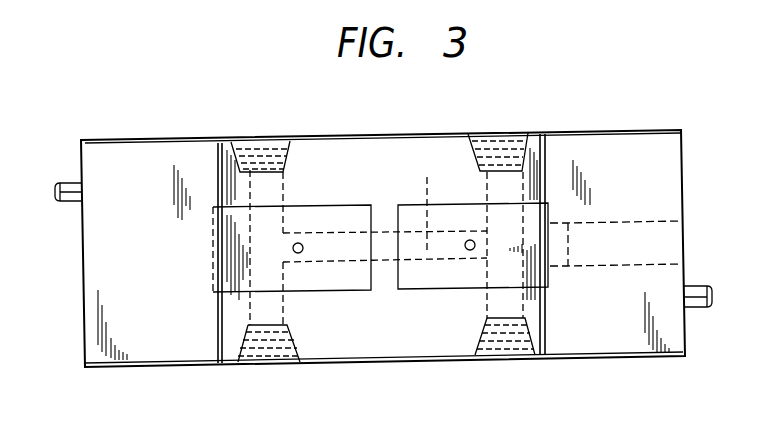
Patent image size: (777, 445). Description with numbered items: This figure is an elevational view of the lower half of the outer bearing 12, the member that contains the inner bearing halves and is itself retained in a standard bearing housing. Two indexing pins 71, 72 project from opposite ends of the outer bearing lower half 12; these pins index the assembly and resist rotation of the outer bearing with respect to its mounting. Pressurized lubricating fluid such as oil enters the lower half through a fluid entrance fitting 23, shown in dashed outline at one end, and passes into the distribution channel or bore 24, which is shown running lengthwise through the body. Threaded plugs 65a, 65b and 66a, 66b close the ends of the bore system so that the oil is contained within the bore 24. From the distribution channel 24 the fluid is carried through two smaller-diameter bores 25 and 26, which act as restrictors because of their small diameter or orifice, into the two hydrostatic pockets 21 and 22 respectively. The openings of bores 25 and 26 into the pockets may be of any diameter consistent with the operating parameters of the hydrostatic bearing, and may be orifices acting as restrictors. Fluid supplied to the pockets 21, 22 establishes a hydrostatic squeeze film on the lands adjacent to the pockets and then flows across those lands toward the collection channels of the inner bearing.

The outer bearing lower half 12 is at (592, 131).
The hydrostatic pocket 21 is at (404, 204).
The hydrostatic pocket 22 is at (233, 207).
The fluid entrance fitting 23 is at (691, 223).
The distribution channel bore 24 is at (430, 202).
The restrictor bore 25 is at (468, 240).
The restrictor bore 26 is at (300, 243).
The threaded plug 65a is at (502, 340).
The threaded plug 65b is at (497, 150).
The threaded plug 66a is at (275, 345).
The threaded plug 66b is at (281, 150).
The indexing pin 71 is at (64, 202).
The indexing pin 72 is at (700, 287).